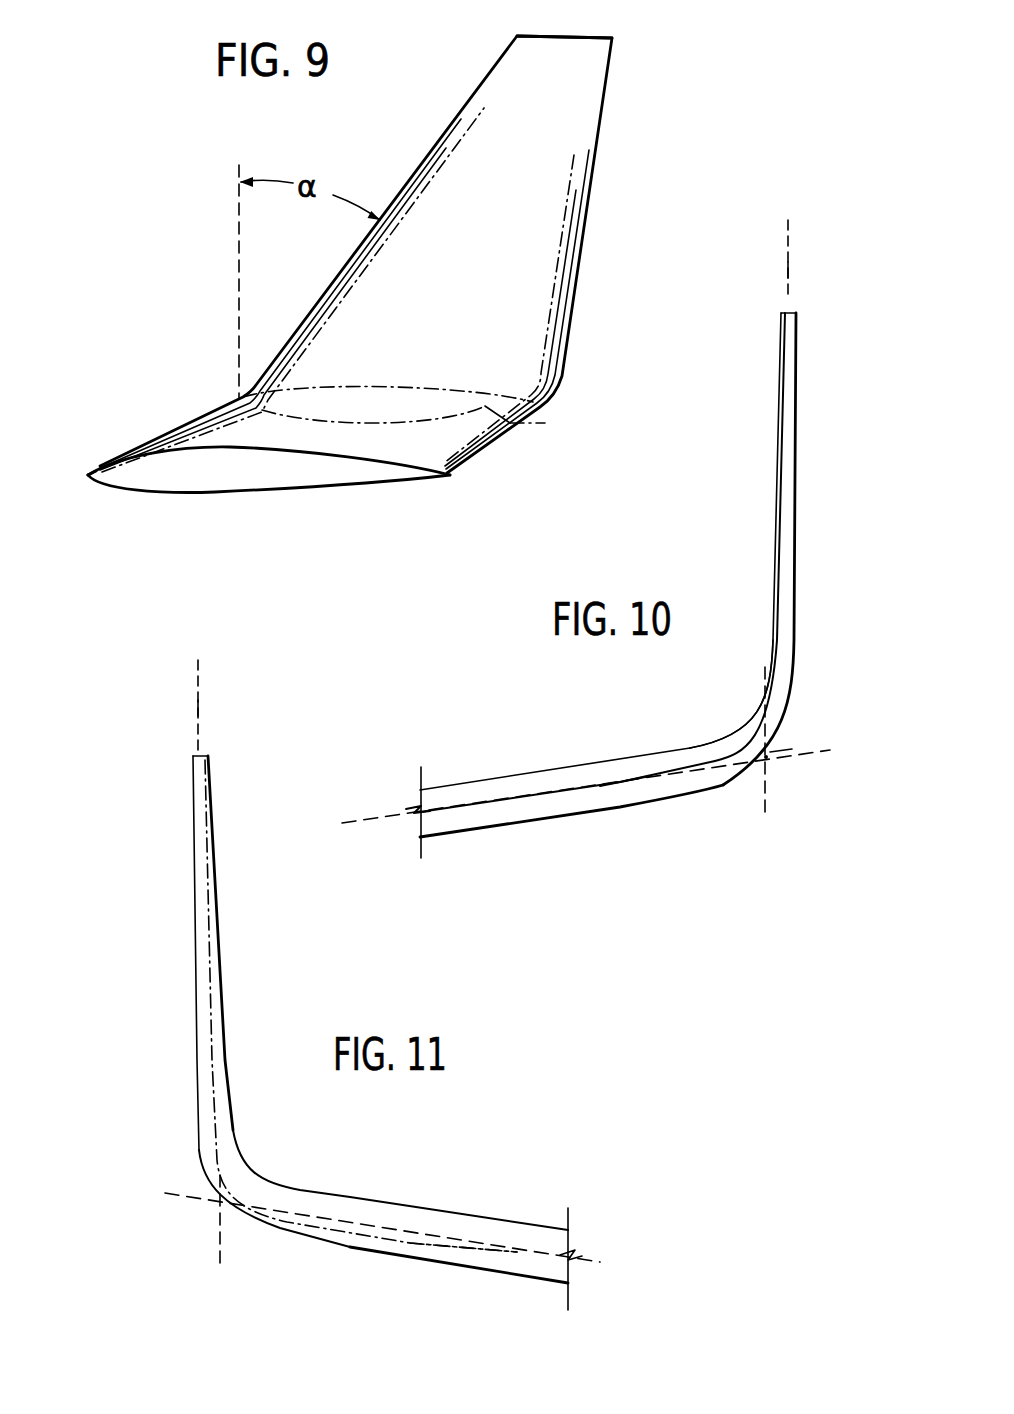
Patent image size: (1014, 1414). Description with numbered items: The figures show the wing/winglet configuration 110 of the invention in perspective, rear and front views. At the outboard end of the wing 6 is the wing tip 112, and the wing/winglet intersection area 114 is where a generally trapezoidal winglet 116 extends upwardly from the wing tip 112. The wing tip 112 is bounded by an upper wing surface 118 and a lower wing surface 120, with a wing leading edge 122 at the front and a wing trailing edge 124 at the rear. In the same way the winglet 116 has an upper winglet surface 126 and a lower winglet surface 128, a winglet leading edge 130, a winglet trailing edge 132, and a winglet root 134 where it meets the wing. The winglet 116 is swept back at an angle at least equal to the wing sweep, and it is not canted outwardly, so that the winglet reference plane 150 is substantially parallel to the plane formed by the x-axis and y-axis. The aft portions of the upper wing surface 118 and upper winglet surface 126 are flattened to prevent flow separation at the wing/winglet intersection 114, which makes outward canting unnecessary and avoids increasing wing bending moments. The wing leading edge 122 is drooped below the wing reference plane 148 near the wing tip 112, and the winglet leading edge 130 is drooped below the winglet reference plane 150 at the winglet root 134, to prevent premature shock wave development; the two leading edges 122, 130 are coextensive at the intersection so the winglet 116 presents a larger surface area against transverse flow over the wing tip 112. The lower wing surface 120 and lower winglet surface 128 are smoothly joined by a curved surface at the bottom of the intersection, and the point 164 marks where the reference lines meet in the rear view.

In FIG. 9, the wing 6 is at (205, 436).
In FIG. 10, the wing 6 is at (497, 778).
In FIG. 9, the wing/winglet configuration 110 is at (198, 306).
In FIG. 10, the wing/winglet configuration 110 is at (818, 626).
In FIG. 11, the wing/winglet configuration 110 is at (172, 829).
In FIG. 9, the wing tip 112 is at (545, 423).
In FIG. 10, the wing tip 112 is at (700, 741).
In FIG. 11, the wing tip 112 is at (311, 1249).
In FIG. 9, the wing/winglet intersection area 114 is at (566, 398).
In FIG. 10, the wing/winglet intersection area 114 is at (774, 766).
In FIG. 11, the wing/winglet intersection area 114 is at (215, 1204).
In FIG. 9, the winglet 116 is at (613, 153).
In FIG. 10, the winglet 116 is at (771, 381).
In FIG. 11, the winglet 116 is at (178, 892).
In FIG. 9, the upper wing surface 118 is at (350, 447).
In FIG. 10, the upper wing surface 118 is at (567, 767).
In FIG. 11, the upper wing surface 118 is at (445, 1211).
In FIG. 9, the lower wing surface 120 is at (217, 493).
In FIG. 10, the lower wing surface 120 is at (535, 822).
In FIG. 11, the lower wing surface 120 is at (478, 1270).
In FIG. 9, the wing leading edge 122 is at (90, 468).
In FIG. 11, the wing leading edge 122 is at (410, 1247).
In FIG. 9, the wing trailing edge 124 is at (492, 448).
In FIG. 10, the wing trailing edge 124 is at (651, 775).
In FIG. 9, the upper winglet surface 126 is at (518, 211).
In FIG. 10, the upper winglet surface 126 is at (772, 488).
In FIG. 11, the upper winglet surface 126 is at (219, 925).
In FIG. 10, the lower winglet surface 128 is at (797, 480).
In FIG. 11, the lower winglet surface 128 is at (192, 980).
In FIG. 9, the winglet leading edge 130 is at (408, 176).
In FIG. 11, the winglet leading edge 130 is at (206, 956).
In FIG. 9, the winglet trailing edge 132 is at (590, 218).
In FIG. 10, the winglet trailing edge 132 is at (776, 520).
In FIG. 10, the winglet root 134 is at (784, 750).
In FIG. 10, the wing reference plane 148 is at (386, 815).
In FIG. 11, the wing reference plane 148 is at (613, 1265).
In FIG. 10, the winglet reference plane 150 is at (788, 270).
In FIG. 11, the winglet reference plane 150 is at (200, 708).
In FIG. 10, the intersection point 164 is at (759, 772).